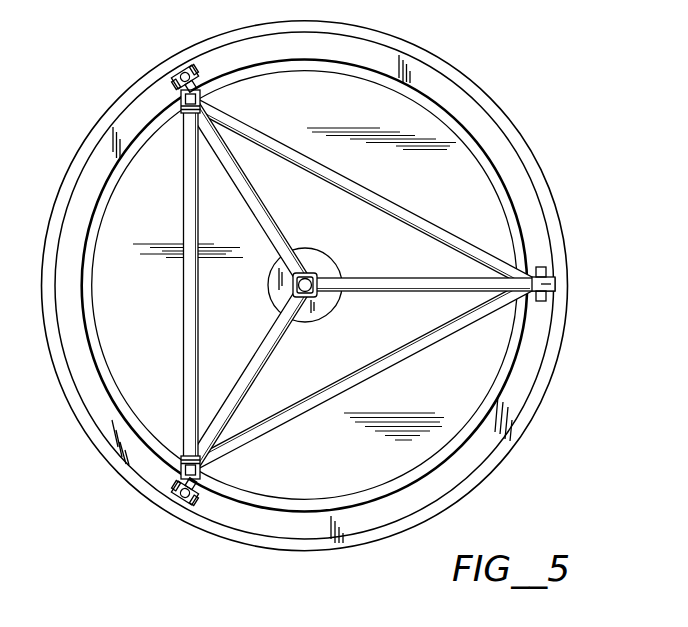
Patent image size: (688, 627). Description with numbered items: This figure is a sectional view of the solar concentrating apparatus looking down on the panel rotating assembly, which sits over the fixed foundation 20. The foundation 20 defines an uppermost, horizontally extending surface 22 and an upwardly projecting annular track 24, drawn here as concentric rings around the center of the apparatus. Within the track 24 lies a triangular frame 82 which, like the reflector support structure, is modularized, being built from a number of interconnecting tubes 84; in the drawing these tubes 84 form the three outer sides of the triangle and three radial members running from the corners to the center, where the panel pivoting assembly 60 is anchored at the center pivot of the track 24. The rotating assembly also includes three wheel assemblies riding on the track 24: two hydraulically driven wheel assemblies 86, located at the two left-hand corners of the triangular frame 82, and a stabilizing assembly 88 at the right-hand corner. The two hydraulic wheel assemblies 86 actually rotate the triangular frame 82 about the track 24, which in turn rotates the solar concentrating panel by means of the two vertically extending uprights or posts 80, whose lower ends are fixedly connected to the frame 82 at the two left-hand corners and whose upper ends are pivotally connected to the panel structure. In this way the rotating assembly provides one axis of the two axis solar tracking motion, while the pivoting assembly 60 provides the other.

The foundation 20 is at (528, 128).
The horizontally extending surface 22 is at (417, 194).
The annular track 24 is at (469, 460).
The panel pivoting assembly 60 is at (319, 275).
The uprights or posts 80 is at (186, 112).
The triangular frame 82 is at (178, 334).
The interconnecting tubes 84 is at (190, 284).
The hydraulically driven wheel assemblies 86 is at (177, 70).
The stabilizing assembly 88 is at (555, 288).